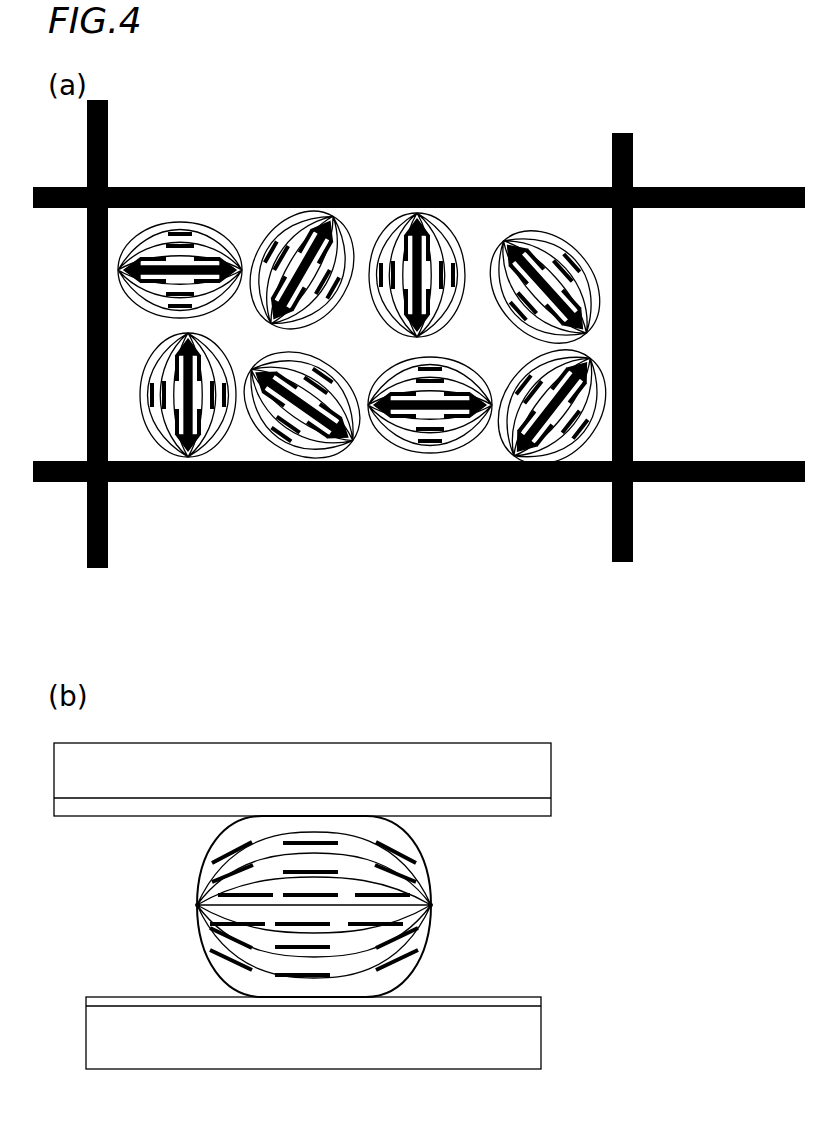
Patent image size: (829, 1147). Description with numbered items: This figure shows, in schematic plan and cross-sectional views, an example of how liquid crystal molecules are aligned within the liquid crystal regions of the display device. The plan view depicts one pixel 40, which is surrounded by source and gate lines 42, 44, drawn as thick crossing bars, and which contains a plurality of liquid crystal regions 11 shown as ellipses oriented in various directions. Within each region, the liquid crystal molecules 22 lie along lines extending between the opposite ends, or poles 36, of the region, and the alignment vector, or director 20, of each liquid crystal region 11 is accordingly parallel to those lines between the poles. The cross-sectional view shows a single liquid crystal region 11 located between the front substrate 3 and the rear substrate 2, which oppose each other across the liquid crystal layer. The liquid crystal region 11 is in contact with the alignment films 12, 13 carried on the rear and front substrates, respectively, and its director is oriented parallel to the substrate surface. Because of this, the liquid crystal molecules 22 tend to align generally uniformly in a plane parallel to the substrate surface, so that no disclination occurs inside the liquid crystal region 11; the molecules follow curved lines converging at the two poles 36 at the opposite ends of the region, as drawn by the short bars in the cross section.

The rear substrate 2 is at (525, 1043).
The front substrate 3 is at (541, 761).
The liquid crystal region 11 is at (583, 437).
The alignment film 12 is at (542, 1000).
The alignment film 13 is at (543, 806).
The alignment vector (director) 20 is at (552, 282).
The liquid crystal molecules 22 is at (418, 446).
The poles 36 is at (197, 903).
The pixel 40 is at (146, 440).
The source line 42 is at (68, 461).
The gate line 44 is at (87, 525).